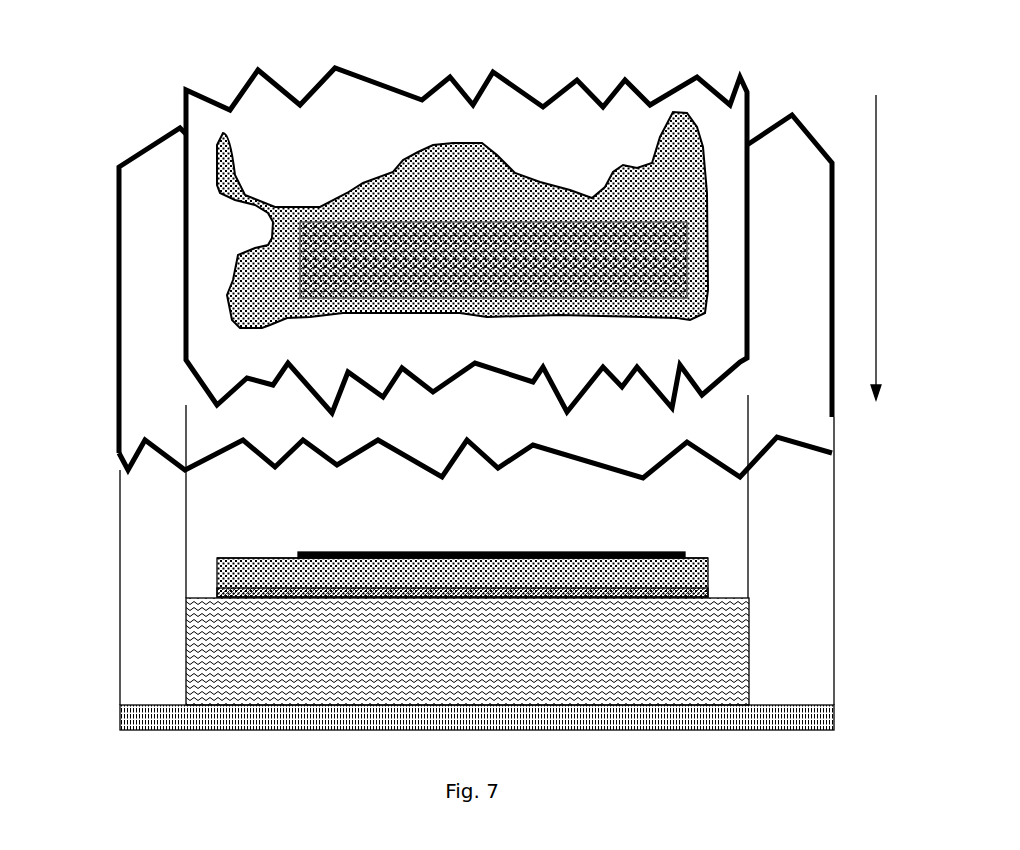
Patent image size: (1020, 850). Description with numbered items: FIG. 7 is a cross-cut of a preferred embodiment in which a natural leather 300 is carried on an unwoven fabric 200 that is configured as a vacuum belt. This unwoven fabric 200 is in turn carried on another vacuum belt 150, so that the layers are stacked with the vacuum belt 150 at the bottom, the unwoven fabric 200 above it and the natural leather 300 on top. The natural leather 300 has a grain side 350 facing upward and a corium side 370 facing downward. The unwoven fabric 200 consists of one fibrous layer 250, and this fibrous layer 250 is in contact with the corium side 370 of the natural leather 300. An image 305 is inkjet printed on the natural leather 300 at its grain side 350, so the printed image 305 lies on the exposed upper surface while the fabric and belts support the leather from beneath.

The vacuum belt 150 is at (130, 202).
The unwoven fabric 200 is at (534, 138).
The fibrous layer 250 is at (213, 633).
The natural leather 300 is at (392, 162).
The image 305 is at (317, 273).
The grain side 350 is at (258, 558).
The corium side 370 is at (217, 588).